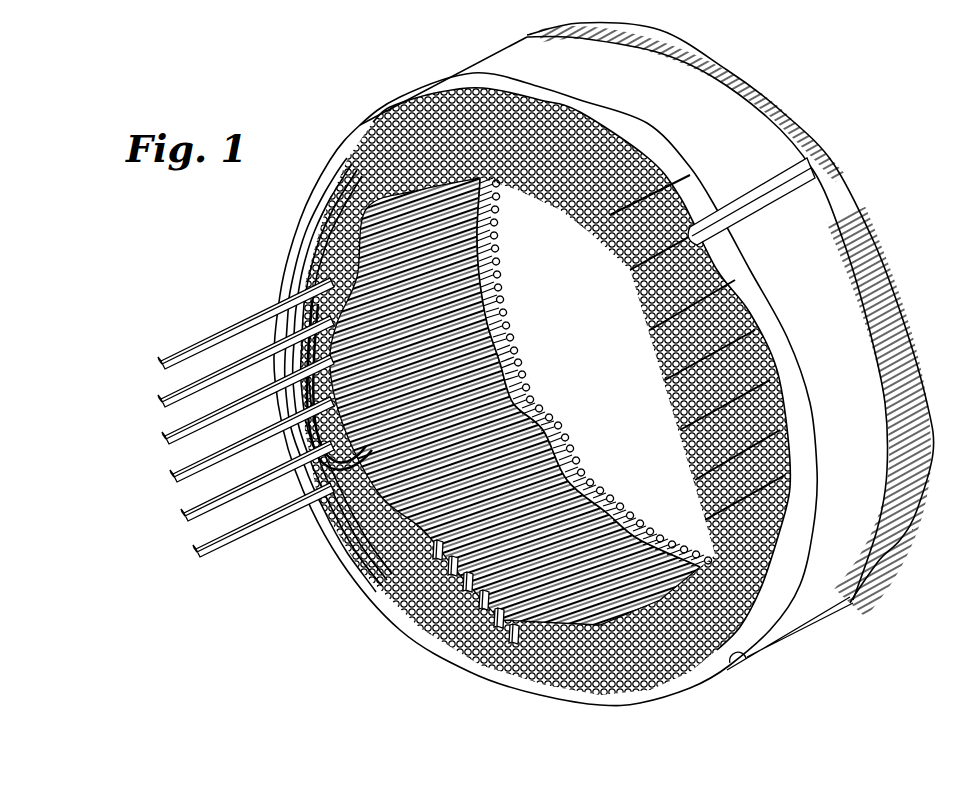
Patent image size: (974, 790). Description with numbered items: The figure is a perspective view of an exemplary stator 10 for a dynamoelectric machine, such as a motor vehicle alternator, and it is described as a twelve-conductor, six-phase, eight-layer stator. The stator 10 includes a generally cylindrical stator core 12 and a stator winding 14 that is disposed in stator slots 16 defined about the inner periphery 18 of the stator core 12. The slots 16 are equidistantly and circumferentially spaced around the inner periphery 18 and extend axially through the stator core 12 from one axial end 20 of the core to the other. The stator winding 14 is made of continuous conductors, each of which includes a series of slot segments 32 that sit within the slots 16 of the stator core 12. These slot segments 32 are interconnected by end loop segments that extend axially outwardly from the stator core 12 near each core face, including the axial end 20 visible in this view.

The stator 10 is at (546, 367).
The stator core 12 is at (440, 73).
The stator winding 14 is at (380, 123).
The stator slots 16 is at (407, 567).
The inner periphery 18 is at (373, 533).
The axial end 20 is at (703, 680).
The slot segments 32 is at (427, 613).